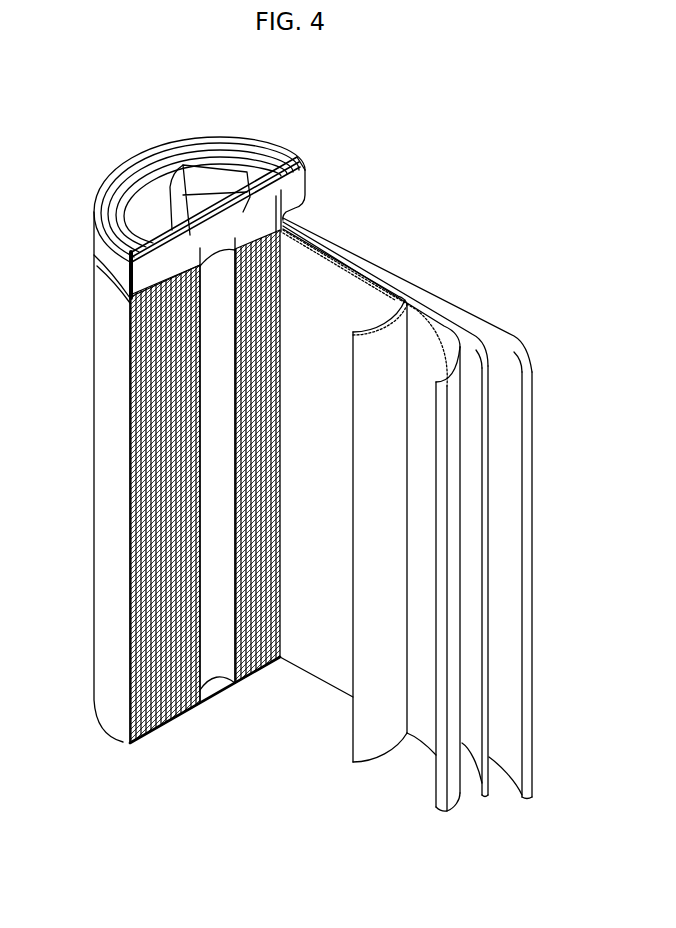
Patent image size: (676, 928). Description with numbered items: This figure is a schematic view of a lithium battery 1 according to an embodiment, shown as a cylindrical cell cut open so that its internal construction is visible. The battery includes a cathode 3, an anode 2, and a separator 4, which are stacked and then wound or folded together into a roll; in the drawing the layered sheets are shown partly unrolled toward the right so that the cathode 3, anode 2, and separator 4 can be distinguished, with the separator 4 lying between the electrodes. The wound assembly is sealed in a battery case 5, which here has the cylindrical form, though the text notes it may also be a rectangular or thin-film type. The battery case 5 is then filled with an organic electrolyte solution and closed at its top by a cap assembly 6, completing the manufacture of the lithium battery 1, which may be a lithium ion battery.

The lithium battery 1 is at (474, 161).
The anode 2 is at (515, 348).
The cathode 3 is at (430, 310).
The separator 4 is at (385, 283).
The battery case 5 is at (103, 482).
The cap assembly 6 is at (197, 173).